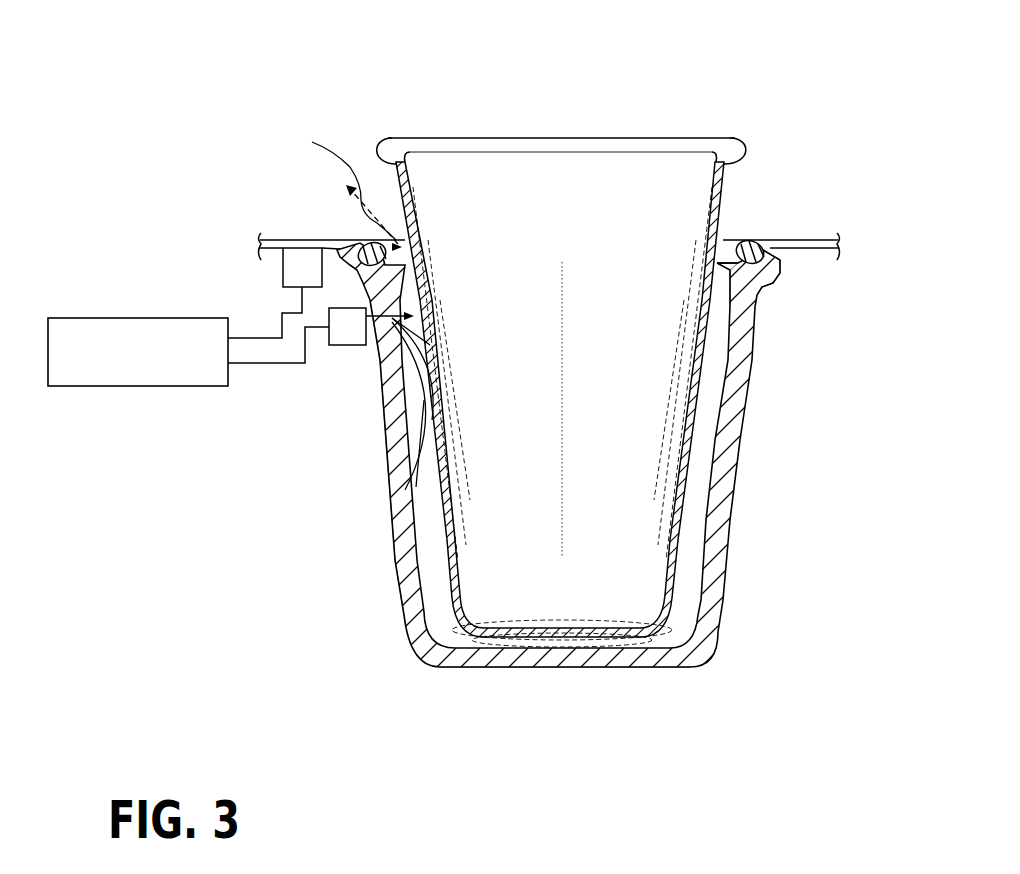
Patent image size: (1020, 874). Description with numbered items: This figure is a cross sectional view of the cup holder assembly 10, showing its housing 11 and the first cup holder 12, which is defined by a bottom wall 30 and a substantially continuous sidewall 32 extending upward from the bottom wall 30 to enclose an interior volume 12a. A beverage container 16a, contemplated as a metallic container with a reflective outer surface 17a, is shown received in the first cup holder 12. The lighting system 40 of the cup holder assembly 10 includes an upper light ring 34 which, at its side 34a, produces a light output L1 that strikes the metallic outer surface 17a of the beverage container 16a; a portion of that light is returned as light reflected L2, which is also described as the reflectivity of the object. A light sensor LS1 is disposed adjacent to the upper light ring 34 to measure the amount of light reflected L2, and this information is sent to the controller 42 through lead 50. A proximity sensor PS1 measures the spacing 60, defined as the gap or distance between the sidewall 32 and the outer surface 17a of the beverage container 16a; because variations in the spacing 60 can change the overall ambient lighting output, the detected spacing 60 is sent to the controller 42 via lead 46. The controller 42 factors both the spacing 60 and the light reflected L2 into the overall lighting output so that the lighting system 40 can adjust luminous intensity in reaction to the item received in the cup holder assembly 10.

The cup holder assembly 10 is at (334, 64).
The first cup holder 12 is at (623, 128).
The interior volume 12a is at (700, 485).
The beverage container 16a is at (719, 136).
The outer surface 17a is at (440, 506).
The housing 11 is at (260, 238).
The bottom wall 30 is at (662, 640).
The sidewall 32 is at (432, 566).
The upper light ring 34 is at (795, 245).
The side 34a is at (757, 238).
The lighting system 40 is at (128, 287).
The controller 42 is at (127, 387).
The lead 46 is at (280, 365).
The lead 50 is at (262, 335).
The spacing 60 is at (398, 382).
The light sensor LS1 is at (283, 262).
The proximity sensor PS1 is at (340, 348).
The light output L1 is at (392, 240).
The light reflected L2 is at (338, 180).